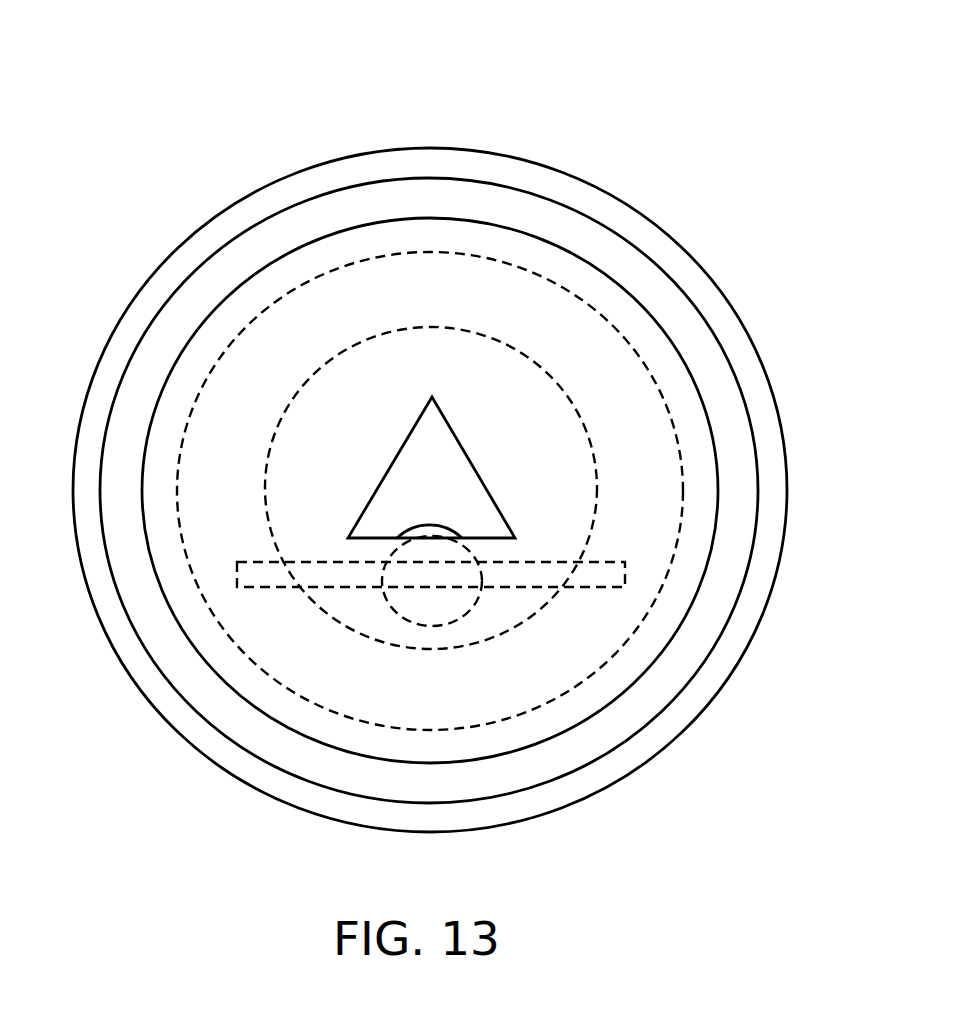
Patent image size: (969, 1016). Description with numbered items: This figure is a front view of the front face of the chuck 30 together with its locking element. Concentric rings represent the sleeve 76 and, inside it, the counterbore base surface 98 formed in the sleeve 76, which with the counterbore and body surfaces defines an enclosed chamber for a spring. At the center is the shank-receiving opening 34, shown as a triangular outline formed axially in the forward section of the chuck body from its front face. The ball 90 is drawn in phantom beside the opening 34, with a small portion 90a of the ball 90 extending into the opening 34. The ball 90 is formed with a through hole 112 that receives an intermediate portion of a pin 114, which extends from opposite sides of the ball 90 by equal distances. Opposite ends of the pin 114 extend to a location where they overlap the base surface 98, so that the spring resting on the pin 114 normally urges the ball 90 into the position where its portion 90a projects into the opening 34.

The chuck 30 is at (650, 122).
The sleeve 76 is at (478, 148).
The counterbore base surface 98 is at (640, 501).
The ball 90 is at (430, 491).
The small portion of the ball 90a is at (428, 540).
The shank-receiving opening 34 is at (458, 443).
The through hole 112 is at (432, 577).
The pin 114 is at (237, 583).